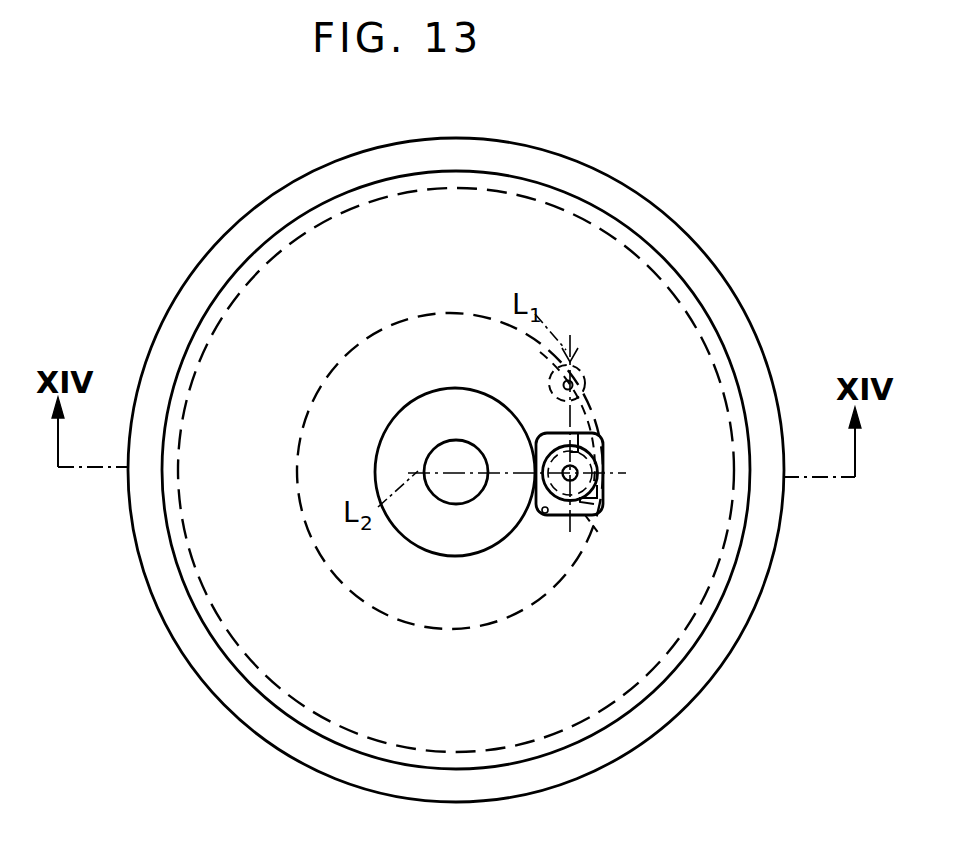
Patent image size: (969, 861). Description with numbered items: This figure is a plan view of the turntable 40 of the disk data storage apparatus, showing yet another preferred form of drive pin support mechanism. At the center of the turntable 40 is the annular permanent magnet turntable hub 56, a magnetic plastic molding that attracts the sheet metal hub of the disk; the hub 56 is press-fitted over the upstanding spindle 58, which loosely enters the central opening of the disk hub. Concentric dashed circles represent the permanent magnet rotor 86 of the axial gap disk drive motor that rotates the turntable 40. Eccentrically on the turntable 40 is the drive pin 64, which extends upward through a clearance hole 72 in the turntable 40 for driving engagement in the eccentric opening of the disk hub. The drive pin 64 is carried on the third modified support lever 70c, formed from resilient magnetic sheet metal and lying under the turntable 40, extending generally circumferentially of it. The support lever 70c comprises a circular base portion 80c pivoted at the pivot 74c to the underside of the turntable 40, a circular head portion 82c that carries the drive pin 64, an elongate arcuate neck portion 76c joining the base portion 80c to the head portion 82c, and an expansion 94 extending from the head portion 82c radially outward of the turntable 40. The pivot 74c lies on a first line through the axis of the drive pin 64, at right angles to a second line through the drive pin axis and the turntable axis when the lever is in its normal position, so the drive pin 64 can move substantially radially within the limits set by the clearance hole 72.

The turntable 40 is at (705, 583).
The permanent magnet rotor 86 is at (708, 352).
The turntable hub 56 is at (410, 416).
The spindle 58 is at (446, 505).
The drive pin 64 is at (603, 500).
The drive pin support lever 70c is at (596, 388).
The clearance hole 72 is at (543, 515).
The pivot 74c is at (569, 364).
The neck portion 76c is at (600, 414).
The base portion 80c is at (553, 373).
The head portion 82c is at (600, 535).
The expansion 94 is at (606, 478).